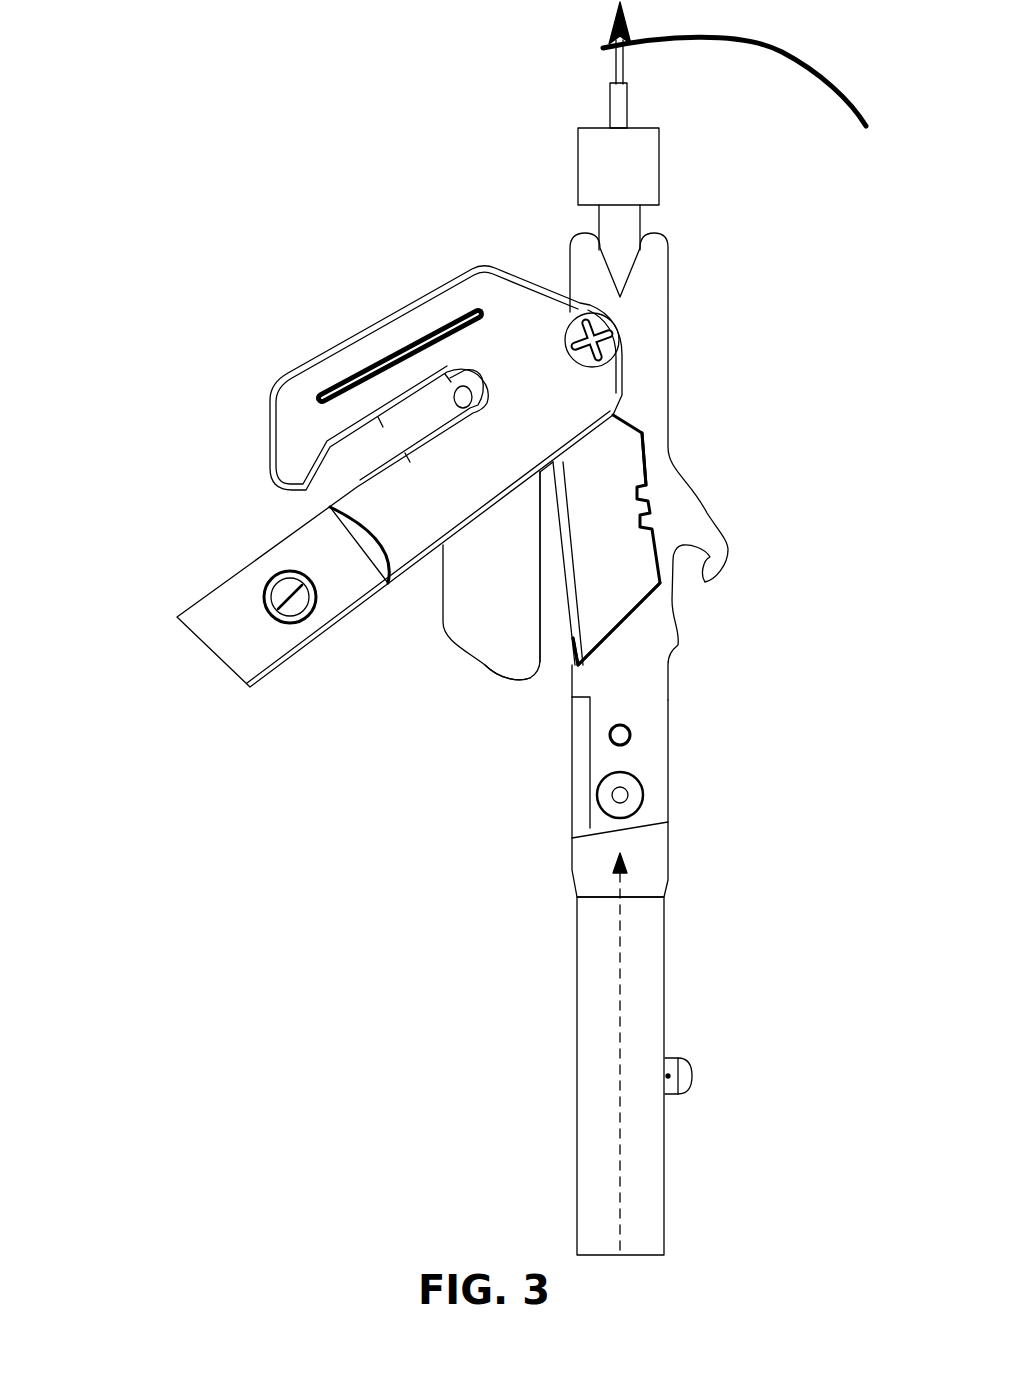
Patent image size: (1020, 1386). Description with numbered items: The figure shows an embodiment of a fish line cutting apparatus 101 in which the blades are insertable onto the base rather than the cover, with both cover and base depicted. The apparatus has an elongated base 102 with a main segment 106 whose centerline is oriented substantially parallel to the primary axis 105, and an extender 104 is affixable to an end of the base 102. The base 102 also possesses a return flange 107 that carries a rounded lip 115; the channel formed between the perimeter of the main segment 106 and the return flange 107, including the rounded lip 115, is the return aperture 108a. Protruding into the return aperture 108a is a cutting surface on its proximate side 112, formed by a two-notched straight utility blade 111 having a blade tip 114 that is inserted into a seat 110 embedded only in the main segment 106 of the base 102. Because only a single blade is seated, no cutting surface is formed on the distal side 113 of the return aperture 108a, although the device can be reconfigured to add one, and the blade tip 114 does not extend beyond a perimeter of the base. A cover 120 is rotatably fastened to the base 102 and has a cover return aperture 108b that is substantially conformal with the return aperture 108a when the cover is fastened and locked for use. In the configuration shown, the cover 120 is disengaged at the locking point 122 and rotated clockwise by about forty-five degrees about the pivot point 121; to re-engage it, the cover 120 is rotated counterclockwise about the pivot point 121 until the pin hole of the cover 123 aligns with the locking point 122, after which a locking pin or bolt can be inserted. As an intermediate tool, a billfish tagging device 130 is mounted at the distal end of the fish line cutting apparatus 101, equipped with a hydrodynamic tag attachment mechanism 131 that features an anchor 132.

The fish line cutting apparatus 101 is at (100, 276).
The base 102 is at (649, 781).
The extender 104 is at (649, 1076).
The primary axis 105 is at (601, 1051).
The main segment 106 is at (649, 466).
The return flange 107 is at (491, 576).
The return aperture 108a is at (548, 594).
The cover return aperture 108b is at (344, 473).
The seat 110 is at (614, 506).
The 2-notched straight utility blade 111 is at (618, 459).
The proximate side 112 is at (590, 563).
The distal side 113 is at (523, 562).
The blade tip 114 is at (616, 631).
The rounded lip 115 is at (514, 693).
The cover 120 is at (399, 476).
The pivot point 121 is at (566, 340).
The locking point 122 is at (637, 771).
The pin hole of the cover 123 is at (268, 609).
The billfish tagging device 130 is at (587, 166).
The hydrodynamic tag attachment mechanism 131 is at (666, 67).
The anchor 132 is at (589, 43).